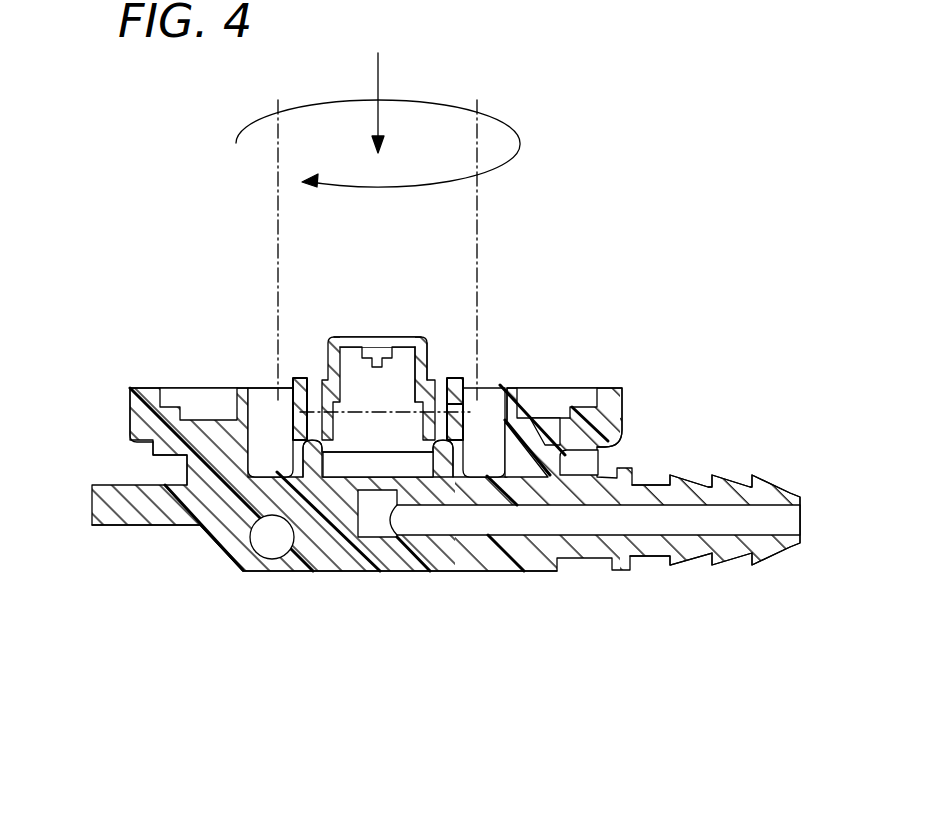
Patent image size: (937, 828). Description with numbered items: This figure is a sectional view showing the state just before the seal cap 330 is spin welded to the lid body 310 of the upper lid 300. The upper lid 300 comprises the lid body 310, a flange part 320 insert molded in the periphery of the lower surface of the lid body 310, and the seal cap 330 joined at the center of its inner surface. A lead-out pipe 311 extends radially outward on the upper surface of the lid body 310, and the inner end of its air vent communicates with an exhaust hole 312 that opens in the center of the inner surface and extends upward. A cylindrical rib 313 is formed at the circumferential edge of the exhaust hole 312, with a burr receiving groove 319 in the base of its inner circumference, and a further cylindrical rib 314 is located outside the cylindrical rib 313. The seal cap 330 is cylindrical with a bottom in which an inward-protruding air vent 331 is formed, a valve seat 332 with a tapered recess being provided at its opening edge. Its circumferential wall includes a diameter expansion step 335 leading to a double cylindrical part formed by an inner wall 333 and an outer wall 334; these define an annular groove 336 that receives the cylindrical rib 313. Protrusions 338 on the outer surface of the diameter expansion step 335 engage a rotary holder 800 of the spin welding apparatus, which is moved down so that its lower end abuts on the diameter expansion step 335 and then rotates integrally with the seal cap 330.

The upper lid 300 is at (514, 578).
The lid body 310 is at (430, 574).
The lead-out pipe 311 is at (699, 556).
The exhaust hole 312 is at (384, 540).
The cylindrical rib 313 is at (213, 551).
The cylindrical rib 314 is at (238, 388).
The burr receiving groove 319 is at (311, 456).
The flange part 320 is at (622, 390).
The seal cap 330 is at (462, 348).
The air vent 331 is at (430, 344).
The valve seat 332 is at (423, 332).
The inner wall 333 is at (342, 456).
The outer wall 334 is at (155, 442).
The diameter expansion step 335 is at (450, 380).
The annular groove 336 is at (462, 418).
The protrusions 338 is at (298, 378).
The rotary holder 800 is at (478, 211).